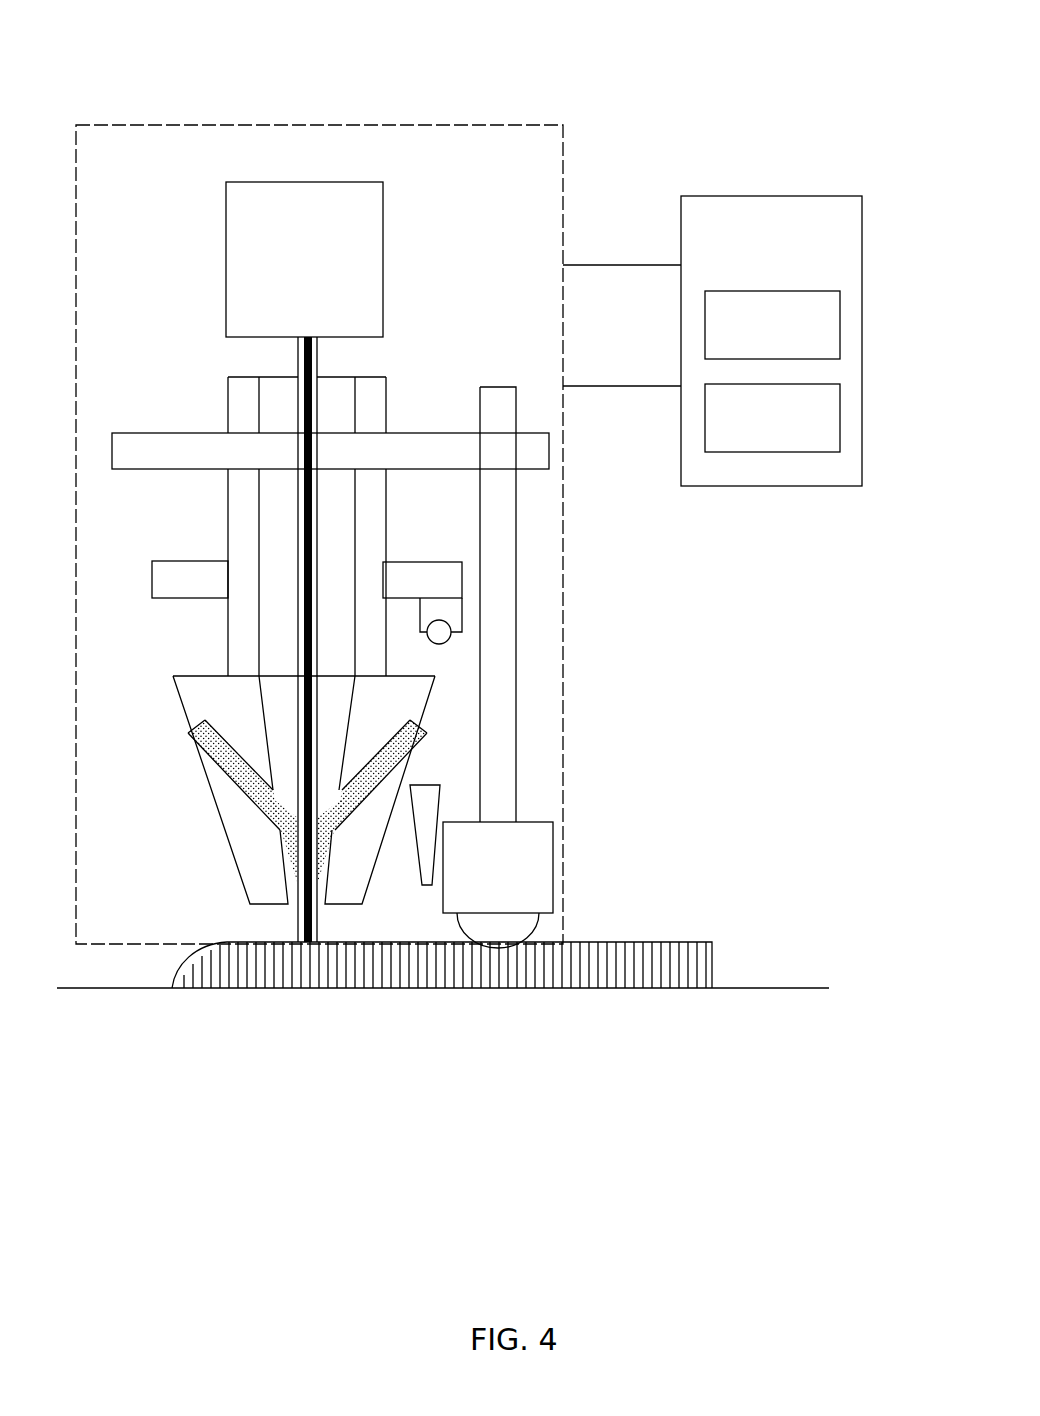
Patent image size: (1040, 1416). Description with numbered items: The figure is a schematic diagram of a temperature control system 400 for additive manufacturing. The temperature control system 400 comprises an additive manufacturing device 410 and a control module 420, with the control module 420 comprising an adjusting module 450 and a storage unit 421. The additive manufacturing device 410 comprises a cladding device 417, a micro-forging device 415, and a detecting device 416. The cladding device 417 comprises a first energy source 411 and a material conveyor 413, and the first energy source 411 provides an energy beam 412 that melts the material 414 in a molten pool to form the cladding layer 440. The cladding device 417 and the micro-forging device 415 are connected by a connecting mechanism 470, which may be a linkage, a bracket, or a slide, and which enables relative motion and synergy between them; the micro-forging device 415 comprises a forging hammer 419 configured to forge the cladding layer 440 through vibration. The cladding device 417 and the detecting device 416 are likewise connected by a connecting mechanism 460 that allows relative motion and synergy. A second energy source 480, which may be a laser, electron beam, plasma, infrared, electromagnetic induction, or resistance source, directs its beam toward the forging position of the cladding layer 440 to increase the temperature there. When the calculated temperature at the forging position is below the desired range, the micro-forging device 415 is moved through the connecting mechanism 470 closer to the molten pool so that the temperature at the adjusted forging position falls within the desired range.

The temperature control system 400 is at (152, 46).
The additive manufacturing device 410 is at (500, 125).
The first energy source 411 is at (226, 258).
The energy beam 412 is at (298, 530).
The material conveyor 413 is at (208, 697).
The material 414 is at (188, 733).
The micro-forging device 415 is at (517, 822).
The detecting device 416 is at (453, 619).
The cladding device 417 is at (416, 352).
The forging hammer 419 is at (483, 923).
The control module 420 is at (773, 196).
The storage unit 421 is at (822, 384).
The cladding layer 440 is at (305, 972).
The adjusting module 450 is at (823, 291).
The connecting mechanism 460 is at (401, 562).
The connecting mechanism 470 is at (192, 432).
The second energy source 480 is at (427, 797).